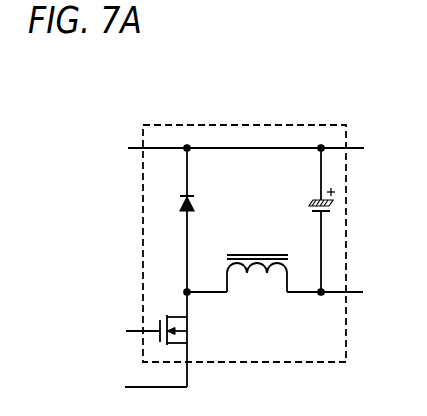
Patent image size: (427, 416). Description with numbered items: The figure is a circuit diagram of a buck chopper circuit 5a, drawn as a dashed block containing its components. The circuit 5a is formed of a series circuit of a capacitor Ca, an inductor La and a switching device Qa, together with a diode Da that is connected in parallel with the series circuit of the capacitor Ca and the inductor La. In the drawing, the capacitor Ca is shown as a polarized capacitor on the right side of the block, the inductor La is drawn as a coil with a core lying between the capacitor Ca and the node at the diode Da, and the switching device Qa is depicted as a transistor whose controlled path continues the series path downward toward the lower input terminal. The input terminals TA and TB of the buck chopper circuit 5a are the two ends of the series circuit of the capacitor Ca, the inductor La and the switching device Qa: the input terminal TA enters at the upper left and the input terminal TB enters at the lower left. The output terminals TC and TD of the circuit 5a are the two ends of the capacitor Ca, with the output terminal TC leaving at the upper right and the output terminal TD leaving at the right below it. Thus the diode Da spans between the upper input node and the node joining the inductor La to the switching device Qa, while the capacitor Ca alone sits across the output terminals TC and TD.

The buck chopper circuit 5a is at (282, 124).
The input terminal TA is at (227, 149).
The input terminal TB is at (138, 374).
The output terminal TC is at (372, 149).
The output terminal TD is at (342, 293).
The diode Da is at (203, 221).
The capacitor Ca is at (303, 220).
The inductor La is at (237, 289).
The switching device Qa is at (172, 320).